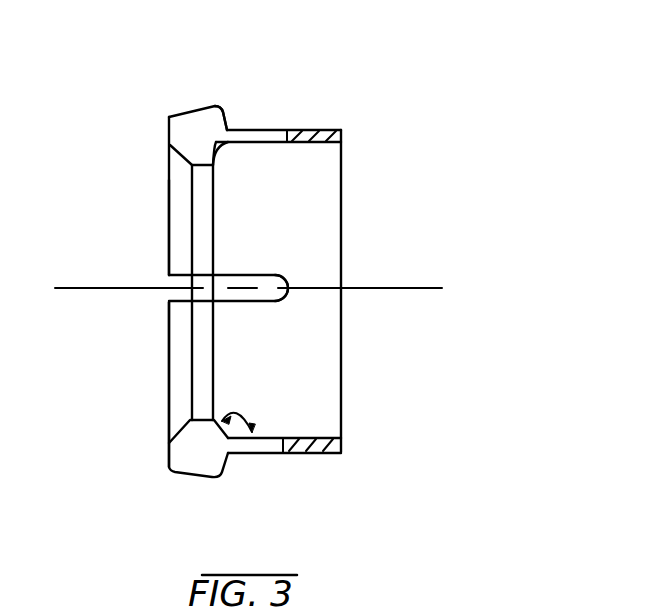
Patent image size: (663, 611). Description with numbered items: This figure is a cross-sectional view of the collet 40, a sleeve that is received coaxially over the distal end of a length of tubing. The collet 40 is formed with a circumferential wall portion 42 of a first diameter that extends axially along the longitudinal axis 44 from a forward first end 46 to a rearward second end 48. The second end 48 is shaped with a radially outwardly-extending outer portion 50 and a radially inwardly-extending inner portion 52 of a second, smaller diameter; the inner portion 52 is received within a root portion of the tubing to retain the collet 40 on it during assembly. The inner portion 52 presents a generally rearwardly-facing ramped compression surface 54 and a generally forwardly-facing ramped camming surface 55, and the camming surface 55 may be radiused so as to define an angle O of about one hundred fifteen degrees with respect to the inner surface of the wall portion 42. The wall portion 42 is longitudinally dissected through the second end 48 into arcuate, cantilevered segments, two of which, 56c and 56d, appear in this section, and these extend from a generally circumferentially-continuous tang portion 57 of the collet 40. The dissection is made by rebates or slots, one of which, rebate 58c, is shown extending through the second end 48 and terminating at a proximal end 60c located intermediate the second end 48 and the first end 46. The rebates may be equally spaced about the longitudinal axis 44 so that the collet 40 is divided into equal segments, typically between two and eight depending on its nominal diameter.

The collet 40 is at (456, 112).
The circumferential wall portion 42 is at (273, 130).
The longitudinal axis 44 is at (427, 287).
The forward first end 46 is at (342, 165).
The rearward second end 48 is at (168, 117).
The radially outwardly-extending outer portion 50 is at (216, 106).
The radially inwardly-extending inner portion 52 is at (214, 170).
The ramped compression surface 54 is at (180, 166).
The ramped camming surface 55 is at (215, 160).
The arcuate cantilevered segment 56c is at (168, 393).
The arcuate cantilevered segment 56d is at (170, 230).
The tang portion 57 is at (320, 130).
The rebate 58c is at (288, 301).
The proximal end of rebate 60c is at (240, 302).
The angle O is at (252, 413).